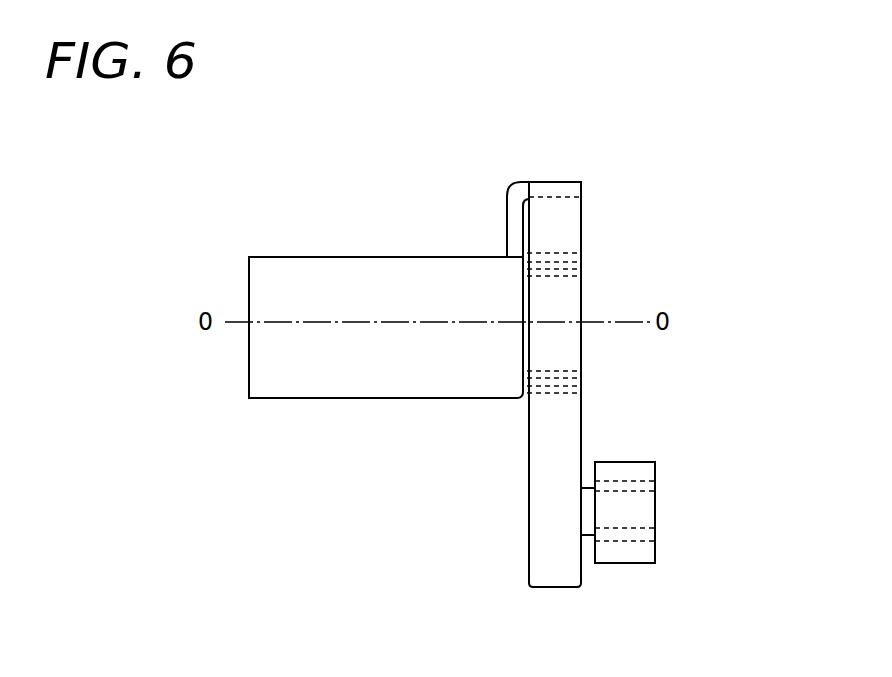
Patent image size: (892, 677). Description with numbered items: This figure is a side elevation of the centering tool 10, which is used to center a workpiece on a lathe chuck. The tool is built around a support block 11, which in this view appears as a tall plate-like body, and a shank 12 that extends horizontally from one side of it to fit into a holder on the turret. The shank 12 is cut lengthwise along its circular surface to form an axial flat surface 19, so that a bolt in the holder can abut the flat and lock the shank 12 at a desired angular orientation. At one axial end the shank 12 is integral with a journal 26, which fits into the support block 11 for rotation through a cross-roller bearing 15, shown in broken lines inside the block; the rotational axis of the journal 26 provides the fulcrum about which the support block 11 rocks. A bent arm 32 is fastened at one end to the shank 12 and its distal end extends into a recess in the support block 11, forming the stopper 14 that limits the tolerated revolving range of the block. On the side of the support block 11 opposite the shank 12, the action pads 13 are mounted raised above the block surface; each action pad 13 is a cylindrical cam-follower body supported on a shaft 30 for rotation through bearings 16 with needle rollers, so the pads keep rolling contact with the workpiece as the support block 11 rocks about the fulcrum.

The centering tool 10 is at (447, 156).
The support block 11 is at (548, 433).
The shank 12 is at (310, 287).
The action pads 13 is at (642, 503).
The stopper 14 is at (558, 187).
The cross-roller bearing 15 is at (563, 252).
The bearings 16 is at (643, 483).
The axial flat surface 19 is at (360, 257).
The journal 26 is at (568, 306).
The shafts 30 is at (537, 515).
The bent arm 32 is at (517, 232).